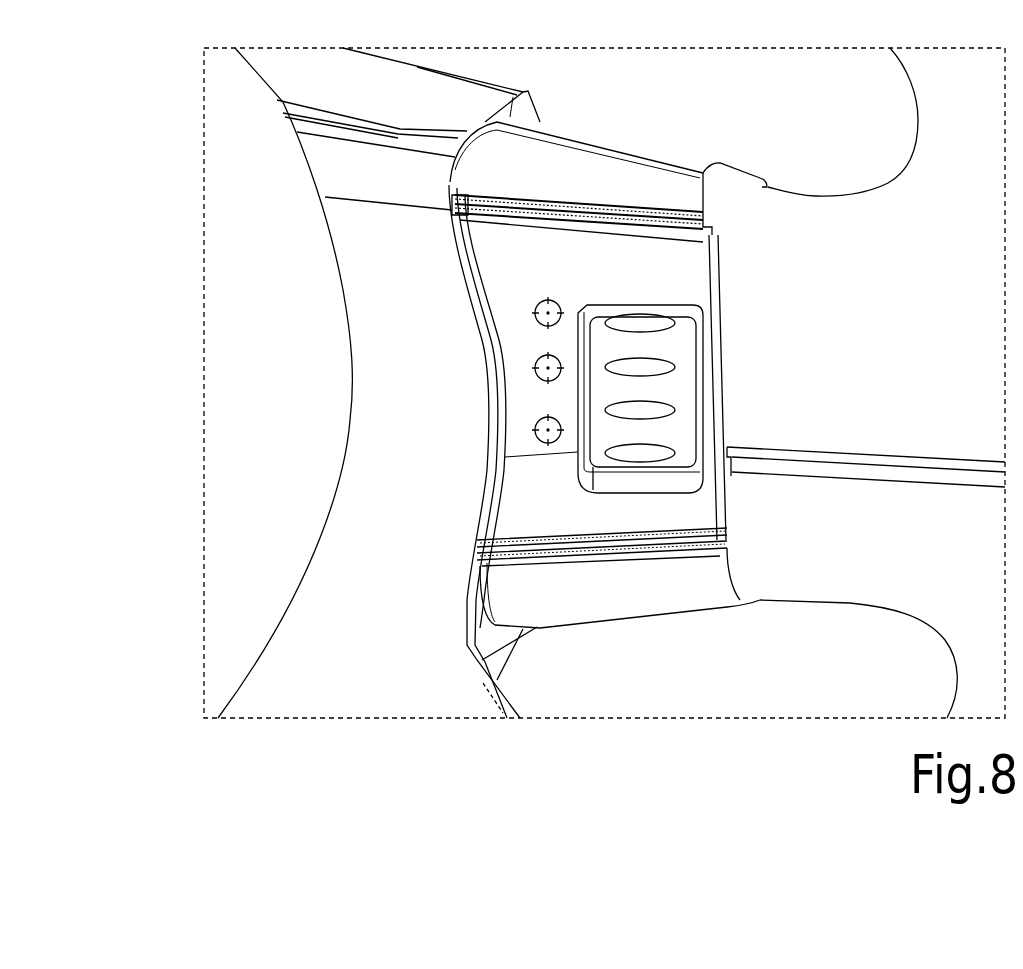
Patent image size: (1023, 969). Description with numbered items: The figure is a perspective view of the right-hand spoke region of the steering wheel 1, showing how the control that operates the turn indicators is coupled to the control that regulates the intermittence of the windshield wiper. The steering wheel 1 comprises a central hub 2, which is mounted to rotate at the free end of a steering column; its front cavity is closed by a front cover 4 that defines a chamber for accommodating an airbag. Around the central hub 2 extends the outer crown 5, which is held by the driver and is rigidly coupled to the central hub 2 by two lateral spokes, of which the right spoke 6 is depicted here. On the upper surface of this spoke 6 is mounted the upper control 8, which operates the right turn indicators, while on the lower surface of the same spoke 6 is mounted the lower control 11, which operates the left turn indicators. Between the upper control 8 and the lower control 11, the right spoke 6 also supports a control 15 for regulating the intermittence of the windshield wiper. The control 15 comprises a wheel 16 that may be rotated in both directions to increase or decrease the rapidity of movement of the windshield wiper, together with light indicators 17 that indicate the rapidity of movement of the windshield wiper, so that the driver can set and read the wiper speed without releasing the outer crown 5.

The steering wheel 1 is at (672, 738).
The central hub 2 is at (180, 276).
The front cover 4 is at (245, 391).
The outer crown 5 is at (953, 80).
The lateral spoke 6 is at (834, 510).
The upper control 8 is at (614, 170).
The lower control 11 is at (623, 588).
The control for regulating the intermittence of the windshield wiper 15 is at (459, 319).
The wheel 16 is at (660, 383).
The light indicators 17 is at (548, 368).